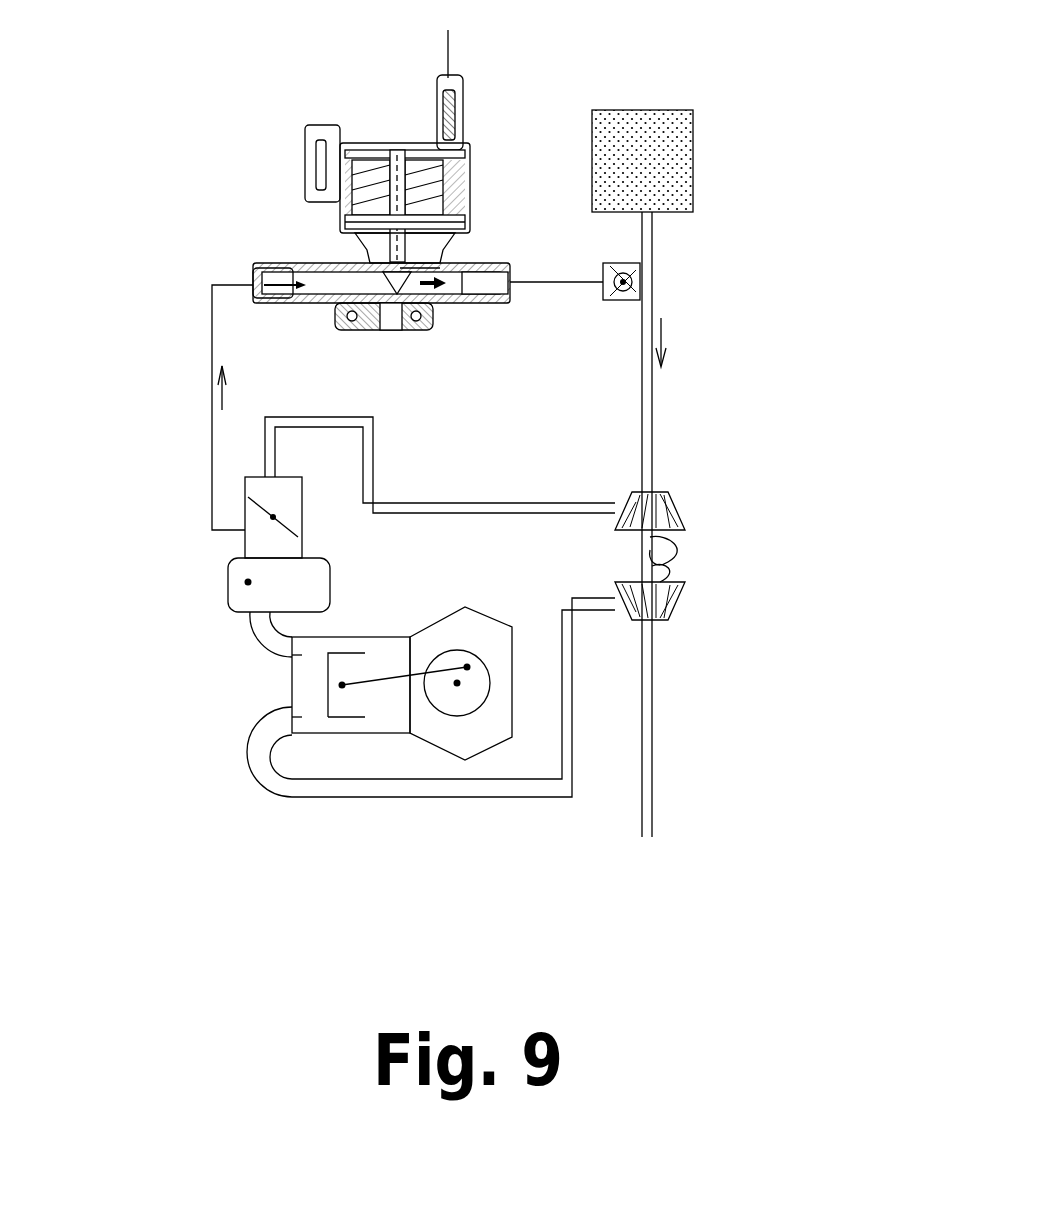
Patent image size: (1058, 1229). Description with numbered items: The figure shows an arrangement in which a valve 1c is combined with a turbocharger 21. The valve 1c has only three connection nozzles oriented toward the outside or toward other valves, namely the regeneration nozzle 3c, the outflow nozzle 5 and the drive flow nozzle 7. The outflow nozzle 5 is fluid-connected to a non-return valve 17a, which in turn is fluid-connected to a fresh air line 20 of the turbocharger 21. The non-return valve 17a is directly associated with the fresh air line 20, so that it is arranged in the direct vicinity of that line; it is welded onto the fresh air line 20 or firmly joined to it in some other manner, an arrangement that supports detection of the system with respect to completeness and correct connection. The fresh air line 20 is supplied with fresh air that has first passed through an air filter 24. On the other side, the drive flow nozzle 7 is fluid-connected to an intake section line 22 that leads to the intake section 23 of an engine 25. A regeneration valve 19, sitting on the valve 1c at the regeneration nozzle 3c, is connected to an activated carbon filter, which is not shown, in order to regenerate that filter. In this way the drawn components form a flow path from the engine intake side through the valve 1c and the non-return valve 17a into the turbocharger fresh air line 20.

The valve 1c is at (308, 262).
The regeneration nozzle 3c is at (417, 262).
The outflow nozzle 5 is at (478, 292).
The drive flow nozzle 7 is at (265, 262).
The non-return valve 17a is at (630, 288).
The regeneration valve 19 is at (392, 145).
The fresh air line 20 is at (645, 397).
The turbocharger 21 is at (678, 615).
The intake section line 22 is at (208, 457).
The intake section 23 is at (248, 582).
The air filter 24 is at (653, 167).
The engine 25 is at (377, 707).